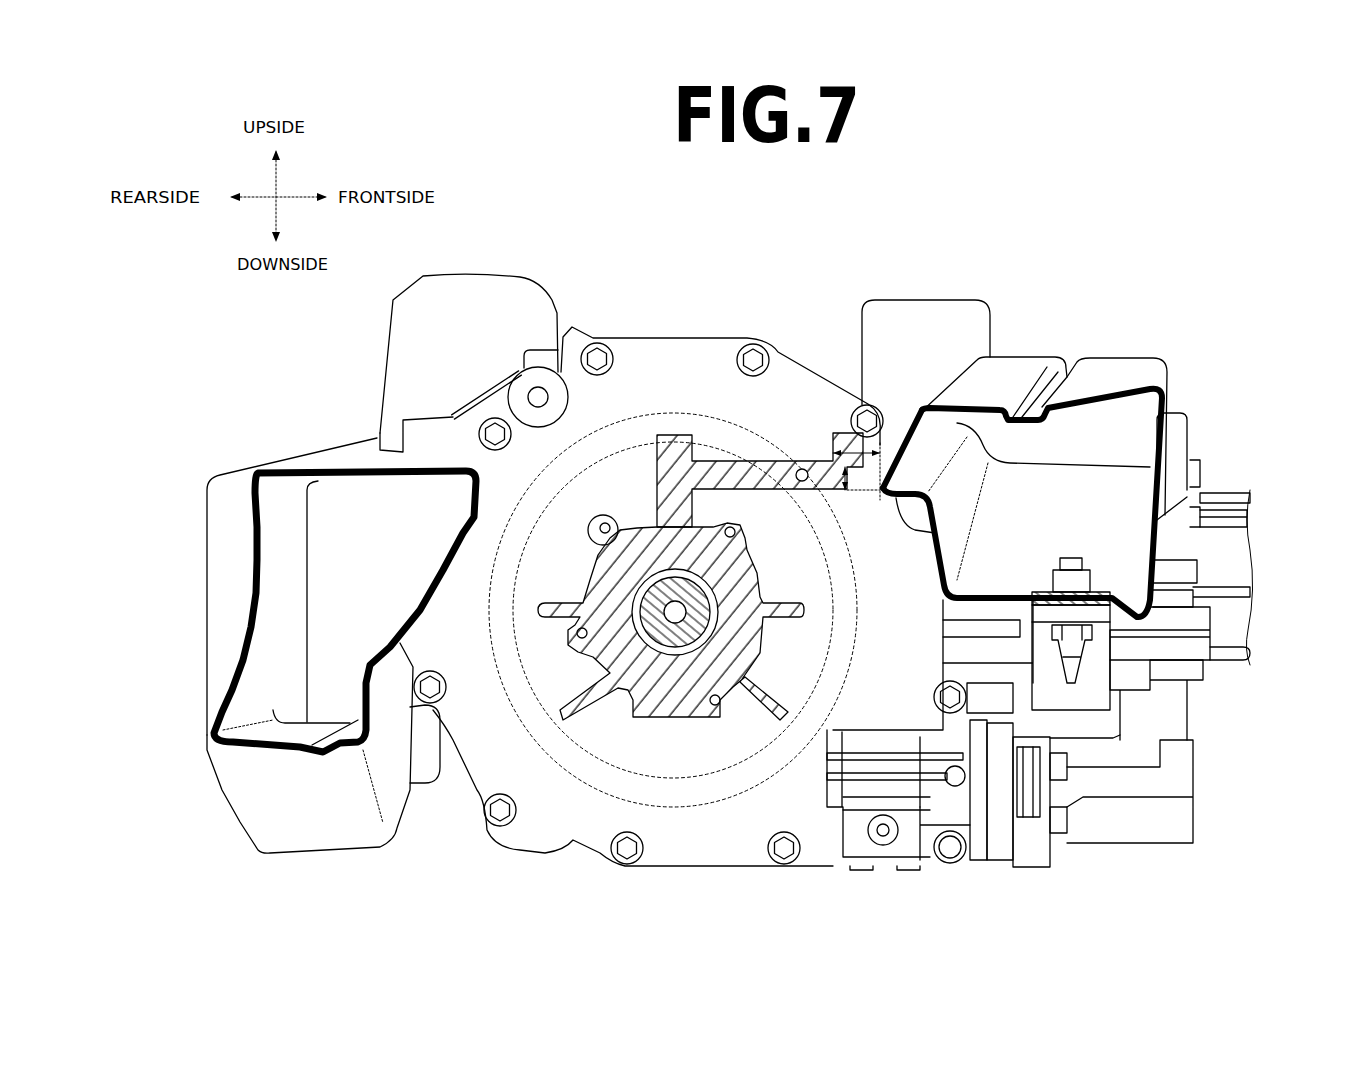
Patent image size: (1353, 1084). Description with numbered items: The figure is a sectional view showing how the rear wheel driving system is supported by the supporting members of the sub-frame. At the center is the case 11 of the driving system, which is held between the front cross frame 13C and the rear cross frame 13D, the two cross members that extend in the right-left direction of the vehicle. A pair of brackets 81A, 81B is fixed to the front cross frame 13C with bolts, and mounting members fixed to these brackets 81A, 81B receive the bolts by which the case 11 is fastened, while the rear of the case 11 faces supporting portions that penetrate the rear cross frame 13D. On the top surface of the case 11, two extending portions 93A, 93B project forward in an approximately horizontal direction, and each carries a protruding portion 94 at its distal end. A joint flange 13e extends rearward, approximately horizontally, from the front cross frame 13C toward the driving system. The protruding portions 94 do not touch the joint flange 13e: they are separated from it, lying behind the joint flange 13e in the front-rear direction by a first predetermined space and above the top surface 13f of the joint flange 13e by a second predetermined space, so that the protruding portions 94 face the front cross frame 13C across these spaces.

The case 11 is at (545, 808).
The front cross frame 13C is at (1110, 380).
The rear cross frame 13D is at (258, 600).
The joint flange 13e is at (955, 535).
The top surface 13f is at (882, 486).
The bracket 81A is at (1180, 649).
The bracket 81B is at (1092, 682).
The extending portion 93A is at (722, 366).
The extending portion 93B is at (790, 453).
The protruding portion 94 is at (847, 447).